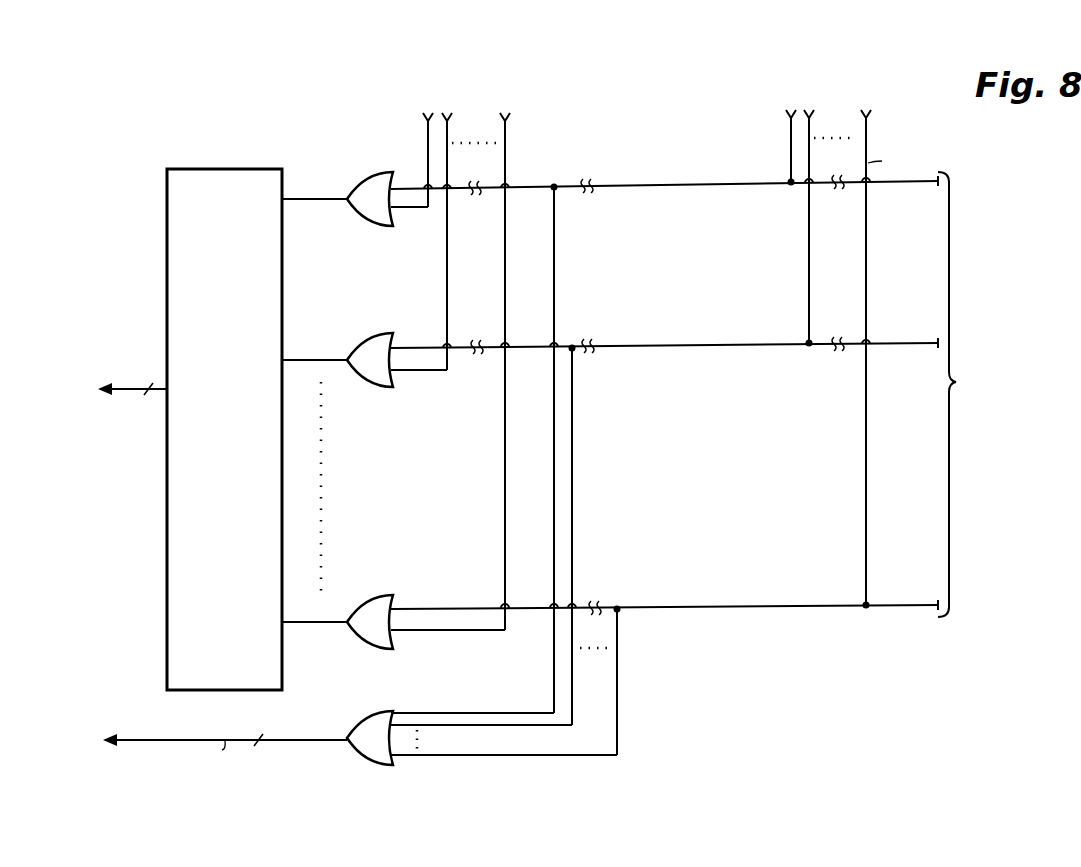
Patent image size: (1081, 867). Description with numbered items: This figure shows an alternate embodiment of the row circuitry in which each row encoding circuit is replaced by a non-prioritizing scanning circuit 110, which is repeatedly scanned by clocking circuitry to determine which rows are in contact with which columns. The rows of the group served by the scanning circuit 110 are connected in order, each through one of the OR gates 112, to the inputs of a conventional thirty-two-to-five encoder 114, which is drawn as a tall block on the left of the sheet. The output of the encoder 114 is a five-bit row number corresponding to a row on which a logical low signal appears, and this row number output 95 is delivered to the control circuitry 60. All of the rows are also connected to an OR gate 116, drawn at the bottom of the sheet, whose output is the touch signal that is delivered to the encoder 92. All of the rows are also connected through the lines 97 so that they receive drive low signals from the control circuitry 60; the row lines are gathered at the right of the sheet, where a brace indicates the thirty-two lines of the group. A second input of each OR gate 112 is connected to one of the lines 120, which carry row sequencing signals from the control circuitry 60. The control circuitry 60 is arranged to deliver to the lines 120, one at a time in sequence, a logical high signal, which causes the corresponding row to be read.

The non-prioritizing scanning circuit 110 is at (122, 151).
The 32-to-5 encoder 114 is at (222, 169).
The OR gate 112 is at (366, 174).
The OR gate 116 is at (387, 710).
The lines 120 is at (428, 160).
The lines 97 is at (872, 146).
The row number output bus 95 is at (129, 388).
The encoder 92 is at (180, 743).
The control circuitry 60 is at (457, 245).